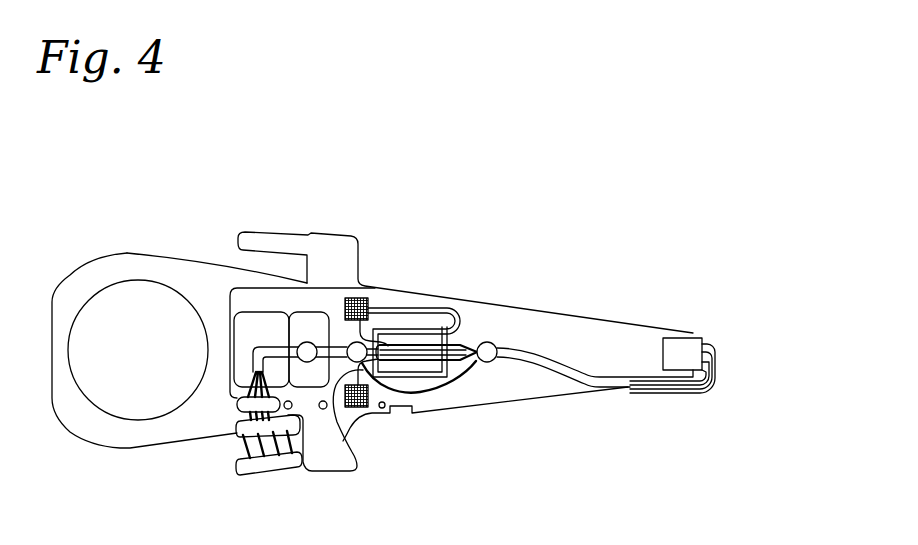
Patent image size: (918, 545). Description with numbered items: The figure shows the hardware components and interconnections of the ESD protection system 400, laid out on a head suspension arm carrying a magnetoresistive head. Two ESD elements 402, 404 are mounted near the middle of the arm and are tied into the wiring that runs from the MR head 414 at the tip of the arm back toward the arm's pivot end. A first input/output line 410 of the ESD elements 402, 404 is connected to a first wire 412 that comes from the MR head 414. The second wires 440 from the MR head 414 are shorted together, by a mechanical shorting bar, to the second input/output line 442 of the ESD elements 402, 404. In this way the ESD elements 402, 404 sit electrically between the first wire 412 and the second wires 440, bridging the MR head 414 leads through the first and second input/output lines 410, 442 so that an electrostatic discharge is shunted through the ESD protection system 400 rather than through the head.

The ESD protection system 400 is at (281, 178).
The ESD element 402 is at (368, 407).
The ESD element 404 is at (363, 298).
The first input/output line 410 is at (349, 471).
The first wire 412 is at (452, 380).
The MR head 414 is at (696, 343).
The second wires 440 is at (470, 343).
The second input/output line 442 is at (454, 313).